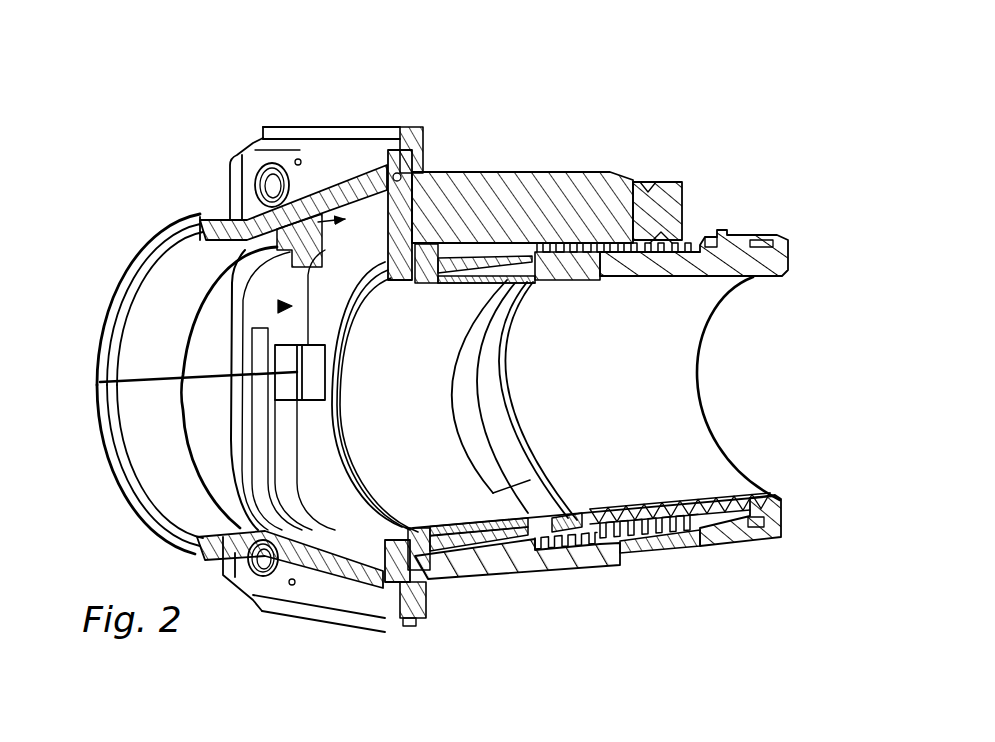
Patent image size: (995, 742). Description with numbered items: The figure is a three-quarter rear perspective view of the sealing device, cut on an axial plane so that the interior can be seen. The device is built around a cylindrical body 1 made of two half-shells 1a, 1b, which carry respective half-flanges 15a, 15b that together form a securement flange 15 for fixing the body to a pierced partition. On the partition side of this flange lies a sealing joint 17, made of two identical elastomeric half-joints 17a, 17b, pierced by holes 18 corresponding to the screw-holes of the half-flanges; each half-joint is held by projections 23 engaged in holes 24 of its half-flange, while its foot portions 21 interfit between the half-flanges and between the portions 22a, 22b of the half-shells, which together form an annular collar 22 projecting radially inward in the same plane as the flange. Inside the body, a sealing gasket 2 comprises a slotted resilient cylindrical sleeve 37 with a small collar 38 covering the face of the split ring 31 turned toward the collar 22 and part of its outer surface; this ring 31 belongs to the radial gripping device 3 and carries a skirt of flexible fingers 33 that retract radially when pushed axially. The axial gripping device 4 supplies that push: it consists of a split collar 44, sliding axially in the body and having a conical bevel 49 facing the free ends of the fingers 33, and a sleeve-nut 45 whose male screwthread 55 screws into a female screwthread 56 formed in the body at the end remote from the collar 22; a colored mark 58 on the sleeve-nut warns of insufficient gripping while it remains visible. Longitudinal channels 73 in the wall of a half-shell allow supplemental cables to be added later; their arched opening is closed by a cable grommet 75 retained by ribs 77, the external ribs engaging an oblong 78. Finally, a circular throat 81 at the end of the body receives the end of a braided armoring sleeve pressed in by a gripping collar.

The body 1 is at (507, 170).
The half-shell 1a is at (135, 232).
The half-shell 1b is at (125, 520).
The sealing gasket 2 is at (550, 286).
The radial gripping device 3 is at (460, 252).
The axial gripping device 4 is at (670, 297).
The flange 15 is at (260, 125).
The half-flange 15a is at (333, 132).
The half-flange 15b is at (338, 618).
The sealing joint 17 is at (247, 147).
The half-joint 17a is at (283, 150).
The half-joint 17b is at (307, 590).
The holes 18 is at (277, 192).
The portions 21 is at (315, 387).
The annular collar 22 is at (285, 438).
The annular half-collar 22a is at (325, 330).
The annular half-collar 22b is at (318, 447).
The projections 23 is at (423, 143).
The holes 24 is at (400, 613).
The split ring 31 is at (433, 520).
The flexible fingers 33 is at (503, 575).
The cylindrical sleeve 37 is at (508, 283).
The small collar 38 is at (425, 570).
The split collar 44 is at (563, 250).
The sleeve-nut 45 is at (790, 232).
The conical bevel 49 is at (556, 515).
The male screwthread 55 is at (685, 542).
The female screwthread 56 is at (633, 523).
The mark 58 is at (705, 530).
The channels 73 is at (308, 260).
The cable grommet 75 is at (663, 210).
The ribs 77 is at (665, 182).
The oblong 78 is at (645, 184).
The throat 81 is at (625, 555).